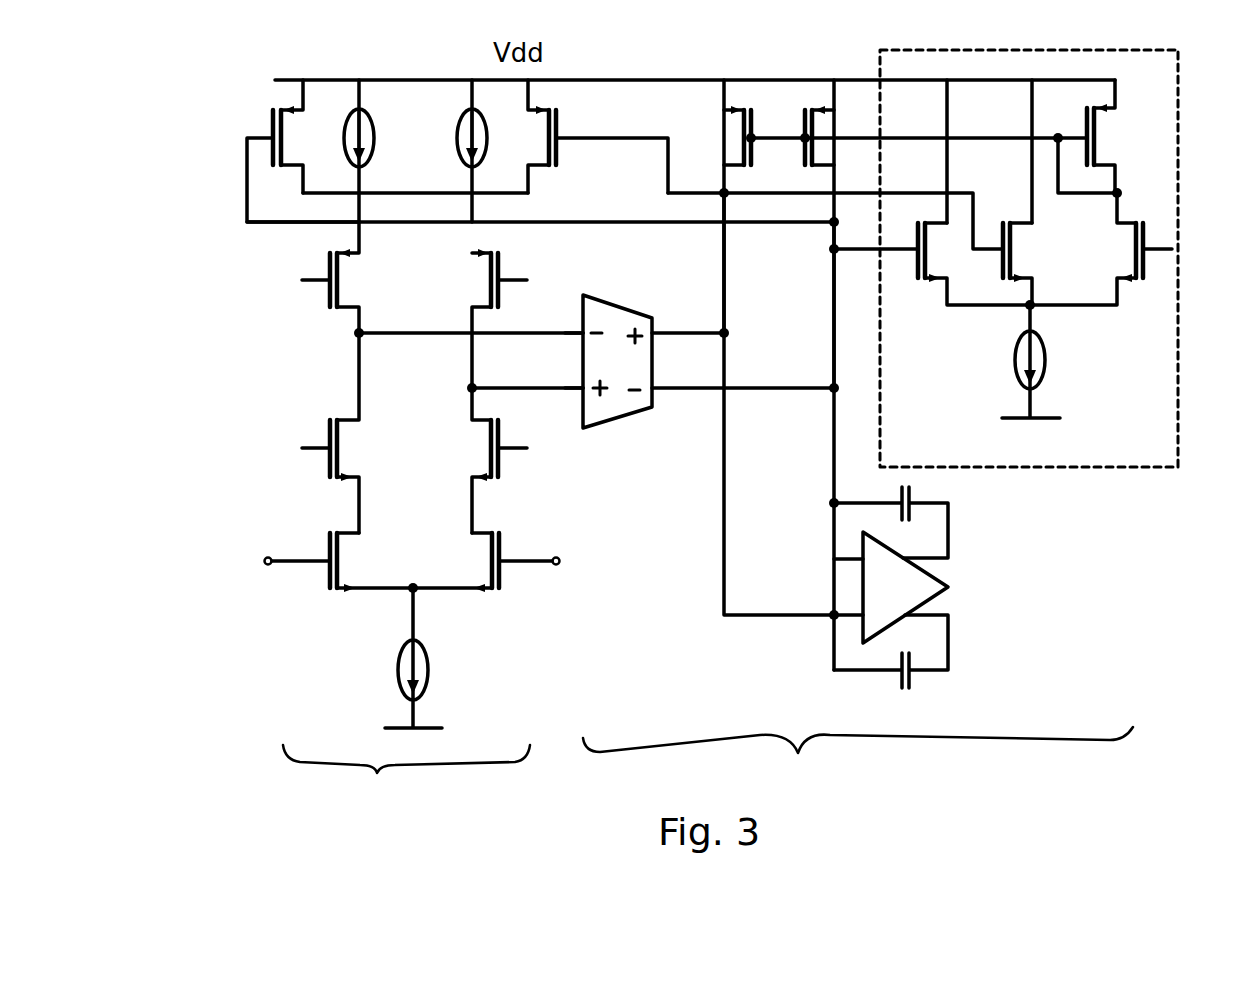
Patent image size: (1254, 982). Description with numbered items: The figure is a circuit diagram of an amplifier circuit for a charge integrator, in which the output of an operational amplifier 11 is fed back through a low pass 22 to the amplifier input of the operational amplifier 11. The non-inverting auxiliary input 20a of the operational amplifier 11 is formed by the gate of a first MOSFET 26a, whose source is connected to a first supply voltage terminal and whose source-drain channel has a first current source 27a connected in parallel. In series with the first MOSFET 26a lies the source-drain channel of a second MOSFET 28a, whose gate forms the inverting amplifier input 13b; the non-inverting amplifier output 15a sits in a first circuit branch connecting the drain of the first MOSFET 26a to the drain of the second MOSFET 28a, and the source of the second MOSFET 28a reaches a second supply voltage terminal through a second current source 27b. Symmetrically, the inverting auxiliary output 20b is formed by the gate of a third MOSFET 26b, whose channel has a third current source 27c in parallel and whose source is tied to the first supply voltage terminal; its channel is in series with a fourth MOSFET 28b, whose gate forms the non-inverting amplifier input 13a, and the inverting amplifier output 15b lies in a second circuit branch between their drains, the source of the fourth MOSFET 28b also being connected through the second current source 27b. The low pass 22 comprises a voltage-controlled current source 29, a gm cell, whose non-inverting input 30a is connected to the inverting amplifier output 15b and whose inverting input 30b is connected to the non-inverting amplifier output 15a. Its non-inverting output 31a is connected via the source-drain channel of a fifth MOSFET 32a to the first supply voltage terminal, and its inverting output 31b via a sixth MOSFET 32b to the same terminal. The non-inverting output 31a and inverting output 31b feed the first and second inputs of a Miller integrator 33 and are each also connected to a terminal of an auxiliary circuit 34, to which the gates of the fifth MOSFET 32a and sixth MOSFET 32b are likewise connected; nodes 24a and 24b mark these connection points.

The operational amplifier 11 is at (406, 786).
The non-inverting amplifier input 13a is at (264, 565).
The inverting amplifier input 13b is at (562, 562).
The non-inverting amplifier output 15a is at (361, 336).
The inverting amplifier output 15b is at (470, 390).
The non-inverting auxiliary input 20a is at (246, 162).
The inverting auxiliary output 20b is at (600, 140).
The low pass 22 is at (858, 763).
The first output node 24a is at (827, 228).
The second output node 24b is at (717, 200).
The first MOSFET 26a is at (263, 120).
The third MOSFET 26b is at (566, 121).
The first current source 27a is at (372, 141).
The second current source 27b is at (430, 672).
The third current source 27c is at (462, 158).
The second MOSFET 28a is at (313, 587).
The fourth MOSFET 28b is at (514, 574).
The voltage-controlled current source 29 is at (603, 412).
The non-inverting input 30a is at (583, 394).
The inverting input 30b is at (583, 330).
The non-inverting output 31a is at (660, 321).
The inverting output 31b is at (660, 394).
The fifth MOSFET 32a is at (721, 127).
The sixth MOSFET 32b is at (832, 124).
The Miller integrator 33 is at (806, 640).
The auxiliary circuit 34 is at (1147, 468).